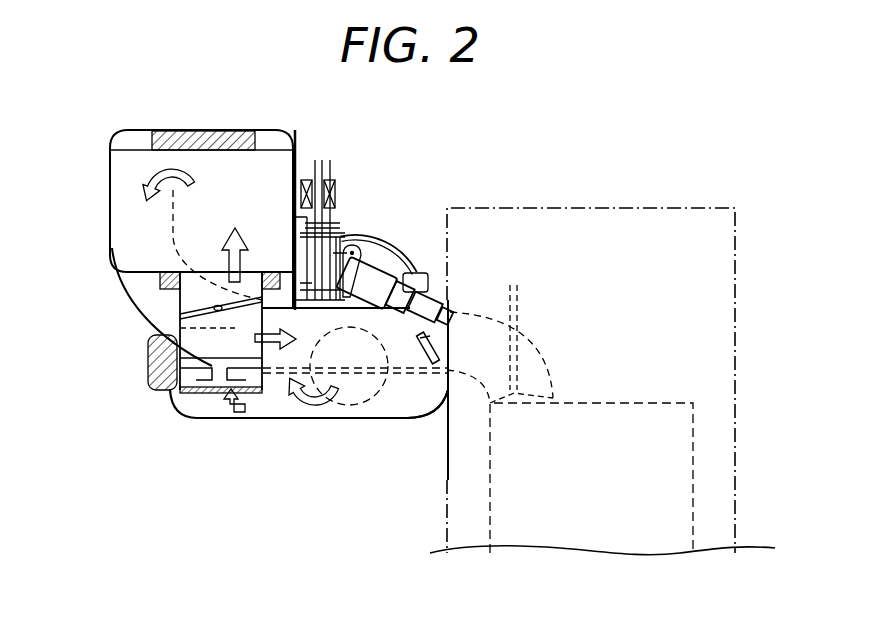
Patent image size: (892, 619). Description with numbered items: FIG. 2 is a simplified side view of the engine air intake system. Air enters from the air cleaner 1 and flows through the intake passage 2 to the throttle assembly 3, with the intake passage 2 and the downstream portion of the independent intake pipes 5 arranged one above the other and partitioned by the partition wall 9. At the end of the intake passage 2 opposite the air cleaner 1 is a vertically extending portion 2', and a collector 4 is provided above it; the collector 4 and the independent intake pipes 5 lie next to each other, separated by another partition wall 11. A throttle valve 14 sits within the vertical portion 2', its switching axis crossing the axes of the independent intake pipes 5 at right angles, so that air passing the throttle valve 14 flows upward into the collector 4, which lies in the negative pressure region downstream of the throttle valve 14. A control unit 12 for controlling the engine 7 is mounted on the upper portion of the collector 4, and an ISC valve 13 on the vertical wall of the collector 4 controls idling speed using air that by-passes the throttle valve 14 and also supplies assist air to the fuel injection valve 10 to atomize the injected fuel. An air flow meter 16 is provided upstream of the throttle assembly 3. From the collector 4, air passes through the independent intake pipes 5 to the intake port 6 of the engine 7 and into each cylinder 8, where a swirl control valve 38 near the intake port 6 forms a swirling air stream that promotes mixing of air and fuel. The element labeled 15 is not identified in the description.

The air cleaner 1 is at (347, 397).
The intake passage 2 is at (425, 440).
The vertical portion 2' is at (225, 418).
The throttle assembly 3 is at (196, 346).
The collector 4 is at (263, 178).
The independent intake pipes 5 is at (122, 210).
The intake port 6 is at (485, 323).
The engine 7 is at (661, 232).
The cylinder 8 is at (678, 453).
The partition wall 9 is at (300, 386).
The fuel injection valve 10 is at (375, 258).
The partition wall 11 is at (173, 241).
The control unit 12 is at (207, 128).
The ISC valve 13 is at (336, 183).
The throttle valve 14 is at (175, 302).
The outlet 15 is at (252, 368).
The air flow meter 16 is at (148, 372).
The swirl control valve 38 is at (448, 332).